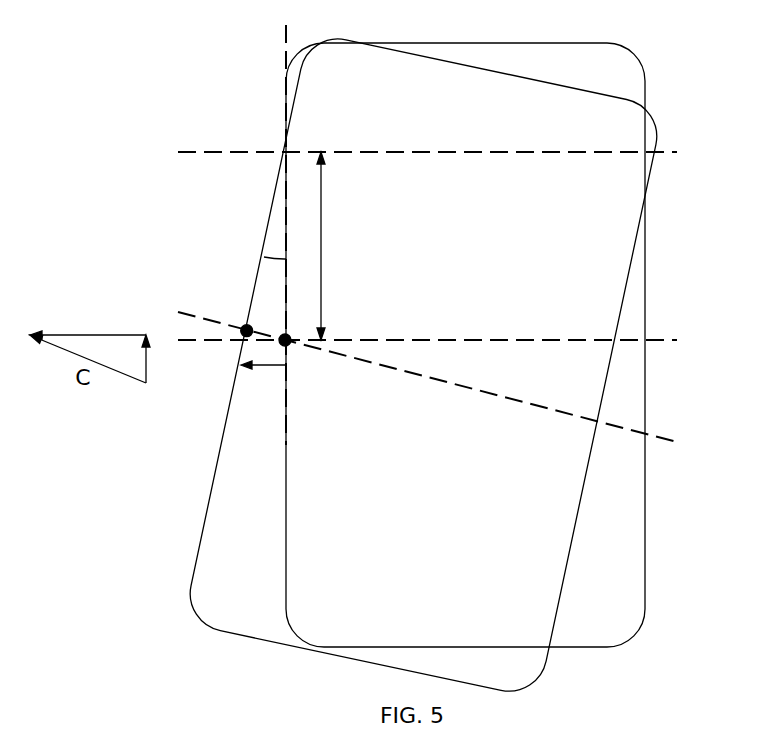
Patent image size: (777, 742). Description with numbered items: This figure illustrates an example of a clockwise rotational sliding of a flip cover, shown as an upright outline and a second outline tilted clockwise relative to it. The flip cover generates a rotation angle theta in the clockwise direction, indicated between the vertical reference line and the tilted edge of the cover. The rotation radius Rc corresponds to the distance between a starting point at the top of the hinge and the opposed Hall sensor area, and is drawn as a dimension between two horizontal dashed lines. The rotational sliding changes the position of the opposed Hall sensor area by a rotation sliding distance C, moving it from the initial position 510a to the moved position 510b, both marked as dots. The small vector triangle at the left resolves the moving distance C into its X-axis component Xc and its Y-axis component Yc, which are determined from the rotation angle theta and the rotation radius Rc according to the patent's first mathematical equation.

The opposed Hall sensor area position 510a is at (287, 346).
The opposed Hall sensor area position 510b is at (244, 326).
The rotation radius Rc is at (333, 246).
The rotation sliding distance C is at (263, 379).
The X-axis component of C Xc is at (88, 324).
The Y-axis component of C Yc is at (161, 359).
The rotation angle theta is at (275, 272).